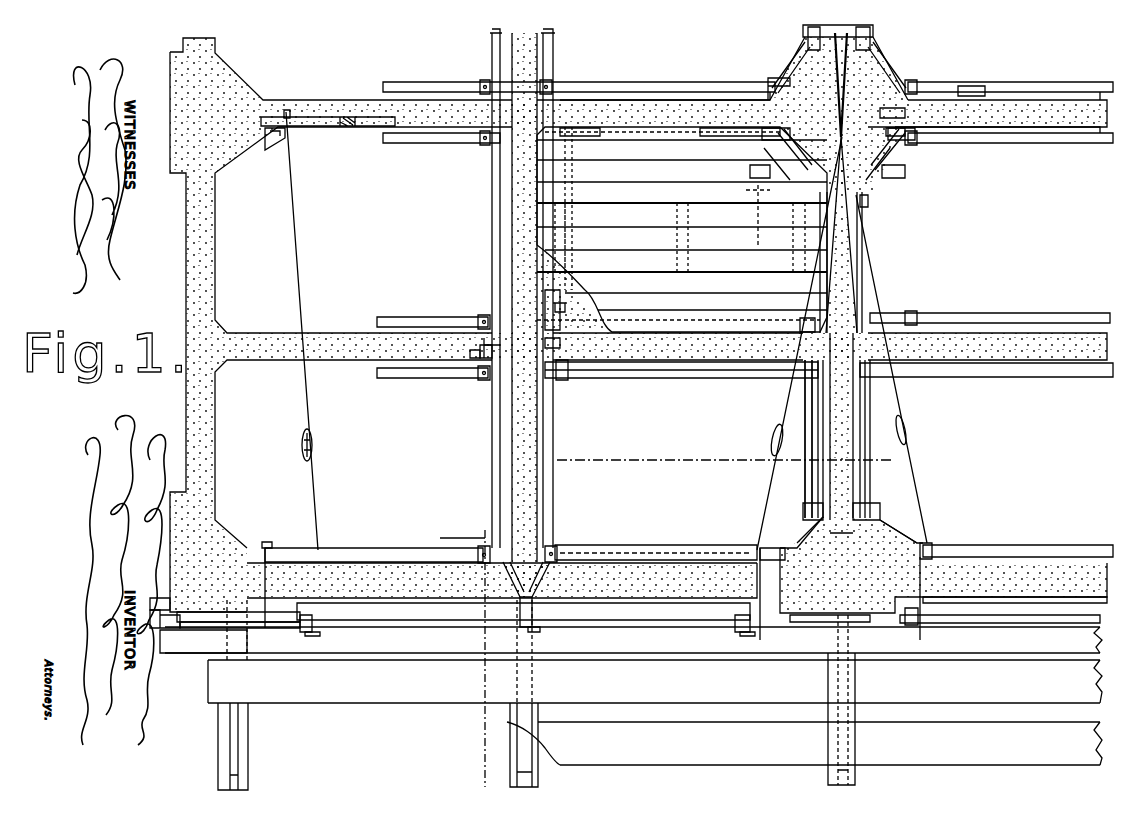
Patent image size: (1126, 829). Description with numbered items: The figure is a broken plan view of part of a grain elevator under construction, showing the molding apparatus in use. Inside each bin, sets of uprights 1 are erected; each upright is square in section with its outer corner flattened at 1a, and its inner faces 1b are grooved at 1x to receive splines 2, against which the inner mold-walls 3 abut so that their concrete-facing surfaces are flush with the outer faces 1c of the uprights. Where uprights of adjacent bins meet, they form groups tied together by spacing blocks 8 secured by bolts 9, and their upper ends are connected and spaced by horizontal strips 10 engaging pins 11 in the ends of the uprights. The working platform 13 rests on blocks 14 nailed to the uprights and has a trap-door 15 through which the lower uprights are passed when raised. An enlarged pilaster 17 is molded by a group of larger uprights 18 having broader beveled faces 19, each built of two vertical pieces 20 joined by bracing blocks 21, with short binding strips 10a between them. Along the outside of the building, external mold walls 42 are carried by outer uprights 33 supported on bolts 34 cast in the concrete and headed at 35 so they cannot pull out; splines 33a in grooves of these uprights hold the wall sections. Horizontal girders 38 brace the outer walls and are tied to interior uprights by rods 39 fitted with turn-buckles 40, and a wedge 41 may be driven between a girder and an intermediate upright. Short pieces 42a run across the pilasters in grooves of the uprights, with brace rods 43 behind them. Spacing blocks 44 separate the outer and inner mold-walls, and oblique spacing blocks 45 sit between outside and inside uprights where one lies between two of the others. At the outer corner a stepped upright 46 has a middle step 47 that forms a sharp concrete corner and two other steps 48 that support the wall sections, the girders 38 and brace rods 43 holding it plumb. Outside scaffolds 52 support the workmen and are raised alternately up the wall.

The uprights 1 is at (590, 319).
The flattened outer corner 1a is at (684, 356).
The inner faces of upright 1b is at (480, 350).
The outer faces of upright 1c is at (808, 405).
The grooves 1x is at (461, 381).
The splines 2 is at (886, 222).
The inner mold-walls 3 is at (600, 118).
The spacing blocks 8 is at (875, 318).
The bolts 9 is at (808, 505).
The horizontal strips 10 is at (553, 50).
The short binding strips 10a is at (770, 548).
The pins 11 is at (614, 295).
The working platform 13 is at (682, 229).
The blocks 14 is at (715, 189).
The trap-door 15 is at (623, 462).
The enlarged pilaster 17 is at (839, 76).
The enlarged uprights 18 is at (839, 107).
The beveled faces 19 is at (792, 78).
The vertical pieces 20 is at (766, 82).
The spacing or bracing blocks 21 is at (833, 144).
The outer uprights 33 is at (518, 612).
The splines 33a is at (540, 630).
The bolts 34 is at (610, 578).
The headed or bent inner ends 35 is at (253, 529).
The horizontal girders 38 is at (405, 640).
The tie-rods 39 is at (306, 400).
The turn-buckles 40 is at (312, 442).
The wedge 41 is at (533, 612).
The external mold walls 42 is at (398, 598).
The short pieces of external mold-wall 42a is at (820, 622).
The brace rods 43 is at (285, 622).
The spacing blocks 44 is at (640, 560).
The oblique spacing blocks 45 is at (503, 568).
The corner upright 46 is at (170, 653).
The middle step 47 is at (172, 598).
The outer steps 48 is at (166, 612).
The scaffolds 52 is at (655, 695).